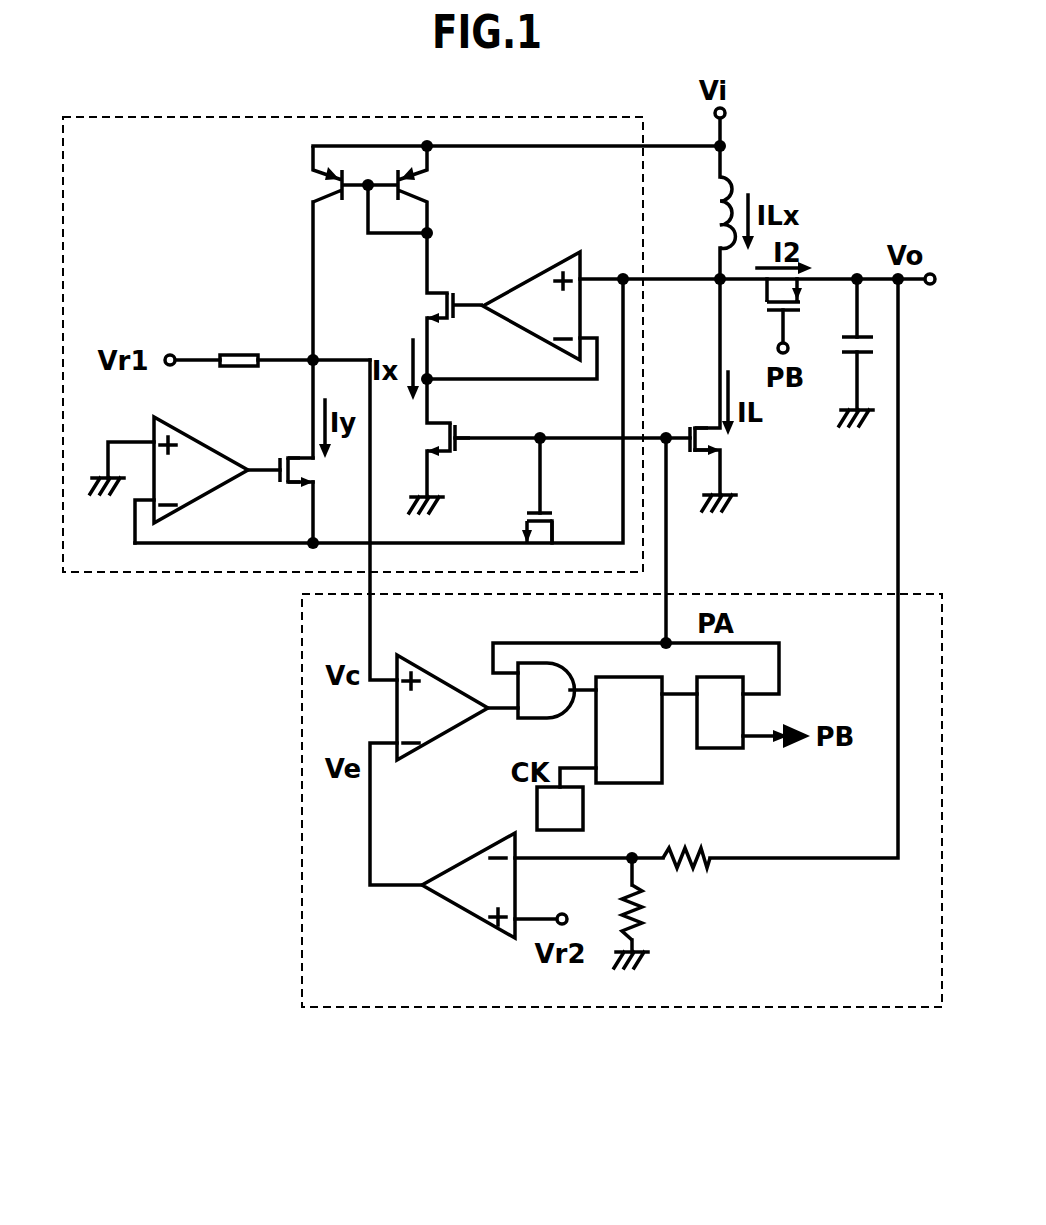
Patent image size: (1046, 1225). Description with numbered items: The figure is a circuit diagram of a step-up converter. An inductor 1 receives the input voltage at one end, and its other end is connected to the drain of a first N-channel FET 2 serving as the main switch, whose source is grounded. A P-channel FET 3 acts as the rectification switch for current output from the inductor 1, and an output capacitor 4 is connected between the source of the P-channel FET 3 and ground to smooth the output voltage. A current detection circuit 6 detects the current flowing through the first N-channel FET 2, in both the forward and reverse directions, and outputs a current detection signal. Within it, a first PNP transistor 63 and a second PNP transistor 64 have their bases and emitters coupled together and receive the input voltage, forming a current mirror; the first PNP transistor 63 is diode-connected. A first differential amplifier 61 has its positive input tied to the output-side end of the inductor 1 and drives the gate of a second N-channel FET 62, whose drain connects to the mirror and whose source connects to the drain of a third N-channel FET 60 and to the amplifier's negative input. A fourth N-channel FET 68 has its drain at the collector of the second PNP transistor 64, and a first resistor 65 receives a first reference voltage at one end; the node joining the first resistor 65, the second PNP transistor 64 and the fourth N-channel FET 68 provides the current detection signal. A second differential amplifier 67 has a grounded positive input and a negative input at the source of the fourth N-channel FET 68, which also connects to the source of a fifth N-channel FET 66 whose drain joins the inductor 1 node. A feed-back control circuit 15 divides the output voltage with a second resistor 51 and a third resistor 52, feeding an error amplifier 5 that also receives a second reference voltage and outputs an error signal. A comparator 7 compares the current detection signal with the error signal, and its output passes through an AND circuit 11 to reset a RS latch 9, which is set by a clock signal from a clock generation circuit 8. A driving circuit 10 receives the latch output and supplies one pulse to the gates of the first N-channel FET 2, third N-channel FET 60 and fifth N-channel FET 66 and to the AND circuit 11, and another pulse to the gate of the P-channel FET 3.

The inductor 1 is at (727, 185).
The first N-channel FET 2 is at (710, 433).
The P-channel FET 3 is at (767, 288).
The output capacitor 4 is at (845, 356).
The error amplifier 5 is at (515, 880).
The current detection circuit 6 is at (160, 575).
The comparator 7 is at (420, 668).
The clock generation circuit 8 is at (583, 810).
The RS latch 9 is at (662, 768).
The driving circuit 10 is at (743, 752).
The AND circuit 11 is at (518, 712).
The feed-back control circuit 15 is at (632, 1010).
The second resistor 51 is at (690, 862).
The third resistor 52 is at (637, 905).
The third N-channel FET 60 is at (460, 430).
The first differential amplifier 61 is at (527, 280).
The second N-channel FET 62 is at (458, 318).
The first PNP transistor 63 is at (422, 190).
The second PNP transistor 64 is at (317, 178).
The first resistor 65 is at (235, 352).
The fifth N-channel FET 66 is at (527, 525).
The second differential amplifier 67 is at (200, 435).
The fourth N-channel FET 68 is at (287, 485).